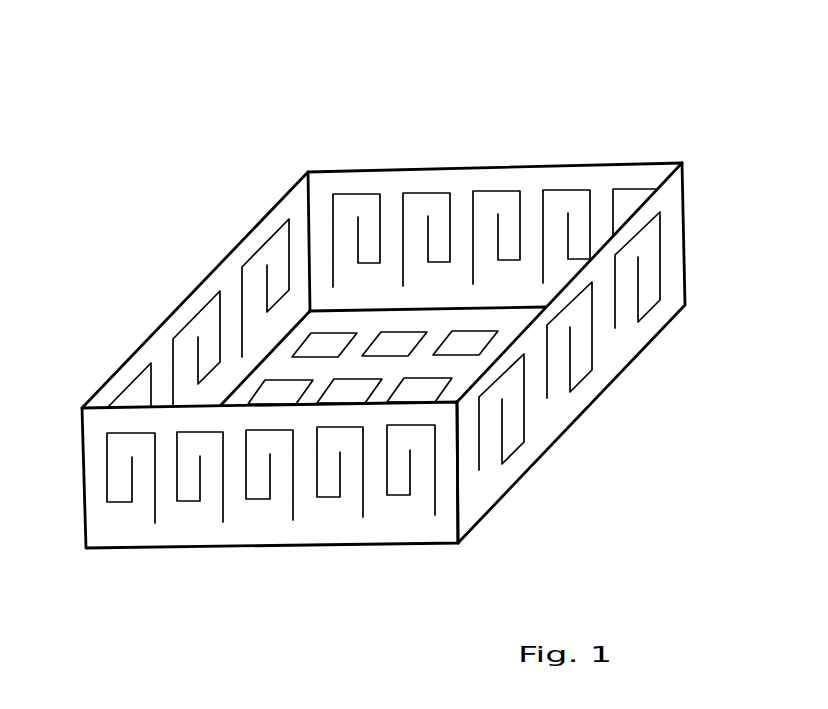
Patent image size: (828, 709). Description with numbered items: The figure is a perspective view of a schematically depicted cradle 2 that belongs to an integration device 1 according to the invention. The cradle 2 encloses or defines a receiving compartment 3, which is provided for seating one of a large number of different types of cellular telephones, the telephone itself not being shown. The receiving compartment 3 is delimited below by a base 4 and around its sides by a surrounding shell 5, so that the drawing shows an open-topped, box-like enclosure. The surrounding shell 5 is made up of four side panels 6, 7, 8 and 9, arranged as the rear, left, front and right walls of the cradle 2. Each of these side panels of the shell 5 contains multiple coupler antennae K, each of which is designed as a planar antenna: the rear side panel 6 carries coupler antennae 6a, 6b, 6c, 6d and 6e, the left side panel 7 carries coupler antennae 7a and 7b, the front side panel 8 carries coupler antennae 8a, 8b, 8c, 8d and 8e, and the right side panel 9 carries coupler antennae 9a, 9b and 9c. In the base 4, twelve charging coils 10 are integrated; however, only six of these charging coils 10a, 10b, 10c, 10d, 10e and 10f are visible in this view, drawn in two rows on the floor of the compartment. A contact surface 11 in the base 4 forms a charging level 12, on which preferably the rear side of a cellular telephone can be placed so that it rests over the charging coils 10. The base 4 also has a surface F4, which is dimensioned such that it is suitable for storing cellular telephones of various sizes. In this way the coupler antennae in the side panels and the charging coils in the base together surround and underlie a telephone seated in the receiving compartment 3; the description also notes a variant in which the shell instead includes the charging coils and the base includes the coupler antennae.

The integration device 1 is at (624, 84).
The cradle 2 is at (582, 163).
The receiving compartment 3 is at (393, 216).
The base 4 is at (448, 333).
The surrounding shell 5 is at (508, 180).
The side panel 6 is at (323, 188).
The coupler antenna 6a is at (630, 188).
The coupler antenna 6b is at (563, 190).
The coupler antenna 6c is at (492, 192).
The coupler antenna 6d is at (425, 193).
The coupler antenna 6e is at (356, 193).
The side panel 7 is at (297, 190).
The coupler antenna 7a is at (263, 236).
The coupler antenna 7b is at (198, 305).
The side panel 8 is at (92, 435).
The coupler antenna 8a is at (153, 510).
The coupler antenna 8b is at (222, 510).
The coupler antenna 8c is at (292, 510).
The coupler antenna 8d is at (362, 508).
The coupler antenna 8e is at (432, 505).
The side panel 9 is at (615, 348).
The coupler antenna 9a is at (525, 433).
The coupler antenna 9b is at (594, 361).
The coupler antenna 9c is at (662, 298).
The charging coils 10 is at (390, 405).
The charging coil 10a is at (335, 342).
The charging coil 10b is at (403, 341).
The charging coil 10c is at (465, 340).
The charging coil 10d is at (272, 393).
The charging coil 10e is at (342, 392).
The charging coil 10f is at (412, 391).
The contact surface 11 is at (569, 316).
The charging level 12 is at (513, 321).
The surface F4 is at (451, 367).